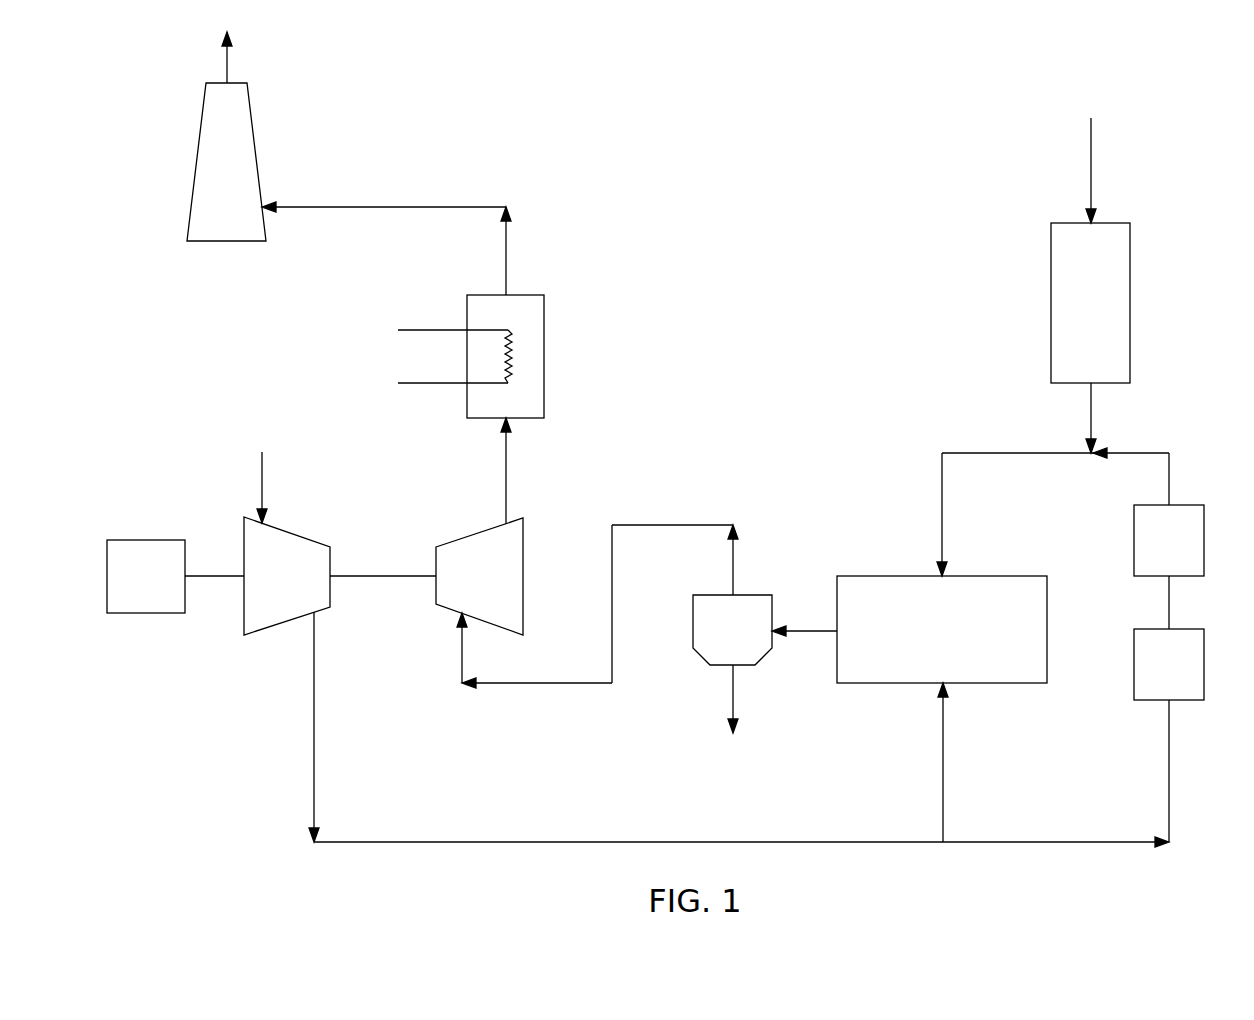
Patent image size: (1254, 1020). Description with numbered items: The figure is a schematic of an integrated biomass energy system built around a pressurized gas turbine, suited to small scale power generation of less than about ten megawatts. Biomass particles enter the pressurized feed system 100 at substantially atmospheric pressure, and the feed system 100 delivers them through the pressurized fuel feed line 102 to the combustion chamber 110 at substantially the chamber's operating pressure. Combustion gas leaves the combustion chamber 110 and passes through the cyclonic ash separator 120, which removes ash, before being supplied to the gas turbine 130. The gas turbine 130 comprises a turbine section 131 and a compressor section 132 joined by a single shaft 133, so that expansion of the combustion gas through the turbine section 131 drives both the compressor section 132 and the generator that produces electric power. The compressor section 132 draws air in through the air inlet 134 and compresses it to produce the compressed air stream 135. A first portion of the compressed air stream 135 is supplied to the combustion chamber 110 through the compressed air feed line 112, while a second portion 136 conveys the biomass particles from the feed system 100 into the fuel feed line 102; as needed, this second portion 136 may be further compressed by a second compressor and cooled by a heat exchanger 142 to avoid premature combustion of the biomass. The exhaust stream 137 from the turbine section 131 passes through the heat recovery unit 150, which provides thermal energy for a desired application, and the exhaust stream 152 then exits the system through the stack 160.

The pressurized feed system 100 is at (1130, 302).
The pressurized fuel feed line 102 is at (1150, 412).
The combustion chamber 110 is at (909, 629).
The compressed air feed line 112 is at (943, 775).
The cyclonic ash separator 120 is at (712, 595).
The gas turbine 130 is at (394, 462).
The turbine section 131 is at (523, 545).
The compressor section 132 is at (244, 612).
The single shaft 133 is at (380, 576).
The air inlet 134 is at (262, 472).
The compressed air stream 135 is at (314, 675).
The second portion of compressed air stream 136 is at (1170, 740).
The exhaust stream 137 is at (508, 473).
The heat exchanger 142 is at (1187, 524).
The heat recovery unit 150 is at (544, 312).
The exhaust stream 152 is at (452, 207).
The stack 160 is at (253, 138).